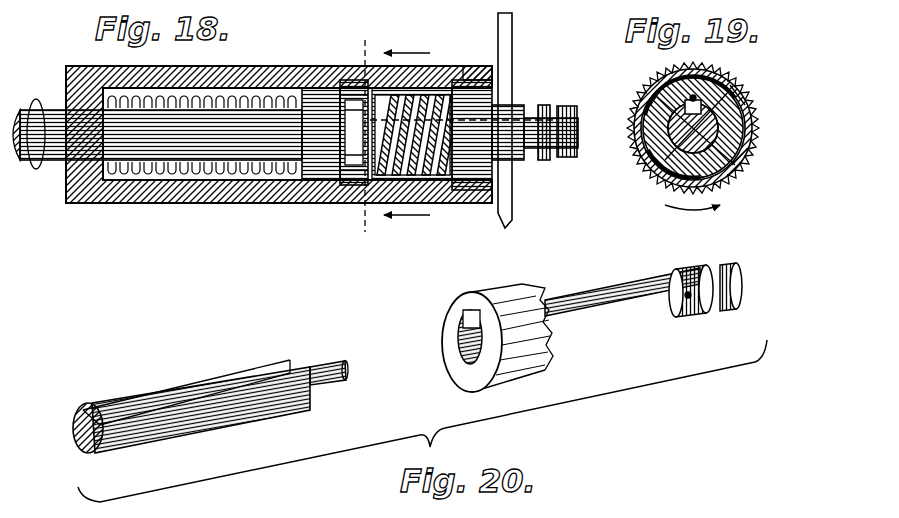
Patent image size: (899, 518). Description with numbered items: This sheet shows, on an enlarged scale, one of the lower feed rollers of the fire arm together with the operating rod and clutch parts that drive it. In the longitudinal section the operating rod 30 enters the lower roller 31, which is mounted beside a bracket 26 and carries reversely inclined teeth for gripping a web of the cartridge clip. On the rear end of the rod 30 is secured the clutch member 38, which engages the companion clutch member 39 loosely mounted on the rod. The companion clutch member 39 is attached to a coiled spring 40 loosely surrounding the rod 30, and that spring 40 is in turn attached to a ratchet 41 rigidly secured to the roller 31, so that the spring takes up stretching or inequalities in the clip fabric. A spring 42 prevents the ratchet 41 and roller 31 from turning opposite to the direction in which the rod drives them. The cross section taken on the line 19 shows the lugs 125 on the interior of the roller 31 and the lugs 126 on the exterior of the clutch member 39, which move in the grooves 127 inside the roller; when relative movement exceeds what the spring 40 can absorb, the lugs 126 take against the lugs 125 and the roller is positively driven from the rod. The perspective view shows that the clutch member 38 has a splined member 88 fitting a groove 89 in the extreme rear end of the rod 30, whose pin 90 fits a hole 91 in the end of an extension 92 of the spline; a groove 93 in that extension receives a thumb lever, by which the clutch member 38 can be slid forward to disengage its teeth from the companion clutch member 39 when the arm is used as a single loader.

In FIG. 18, the section line 19 is at (384, 138).
In FIG. 18, the bracket 26 is at (507, 70).
In FIG. 18, the operating rod 30 is at (57, 150).
In FIG. 19, the operating rod 30 is at (682, 138).
In FIG. 20, the operating rod 30 is at (210, 412).
In FIG. 18, the lower roller 31 is at (158, 190).
In FIG. 19, the lower roller 31 is at (641, 100).
In FIG. 18, the clutch member 38 is at (318, 150).
In FIG. 20, the clutch member 38 is at (480, 295).
In FIG. 18, the companion clutch member 39 is at (338, 180).
In FIG. 18, the coiled spring 40 is at (420, 125).
In FIG. 19, the coiled spring 40 is at (695, 98).
In FIG. 18, the ratchet 41 is at (474, 130).
In FIG. 18, the spring 42 is at (478, 82).
In FIG. 20, the splined member 88 is at (458, 335).
In FIG. 20, the groove 89 is at (232, 378).
In FIG. 18, the pin 90 is at (532, 155).
In FIG. 20, the pin 90 is at (330, 372).
In FIG. 20, the hole 91 is at (688, 300).
In FIG. 18, the extension of the spline 92 is at (545, 112).
In FIG. 19, the extension of the spline 92 is at (707, 110).
In FIG. 20, the extension of the spline 92 is at (582, 300).
In FIG. 18, the groove 93 is at (565, 152).
In FIG. 20, the groove 93 is at (709, 270).
In FIG. 19, the lug 125 is at (660, 88).
In FIG. 18, the lug 126 is at (340, 100).
In FIG. 19, the lug 126 is at (730, 113).
In FIG. 18, the groove 127 is at (352, 128).
In FIG. 19, the groove 127 is at (732, 100).